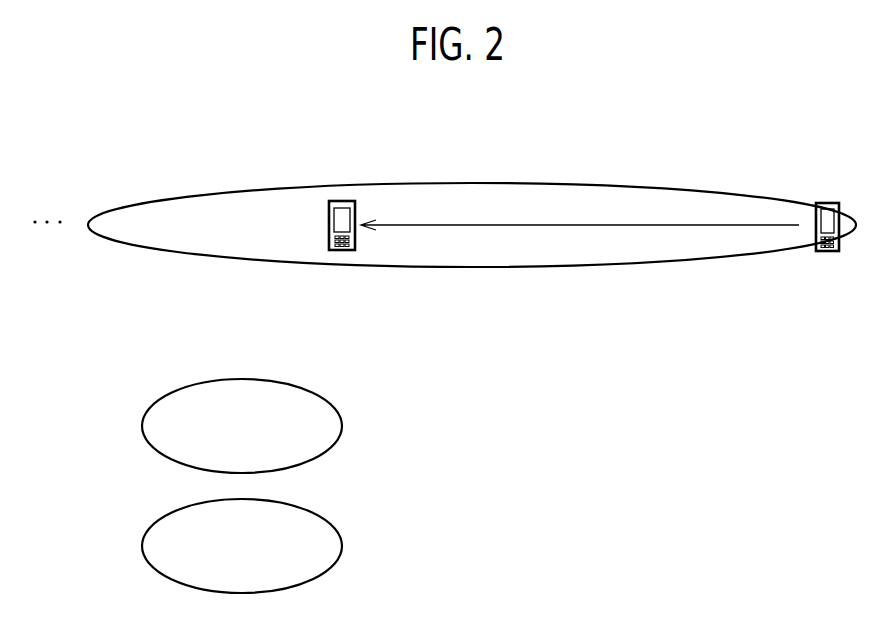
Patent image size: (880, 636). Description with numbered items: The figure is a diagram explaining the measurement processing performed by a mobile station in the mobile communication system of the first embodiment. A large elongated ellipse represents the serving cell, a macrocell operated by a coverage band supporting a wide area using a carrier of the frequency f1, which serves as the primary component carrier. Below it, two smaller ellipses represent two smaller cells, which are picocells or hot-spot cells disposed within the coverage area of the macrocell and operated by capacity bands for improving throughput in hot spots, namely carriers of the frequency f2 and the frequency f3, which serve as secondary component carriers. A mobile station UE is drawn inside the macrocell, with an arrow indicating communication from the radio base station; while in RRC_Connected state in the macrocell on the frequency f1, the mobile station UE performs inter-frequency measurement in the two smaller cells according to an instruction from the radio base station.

The mobile station UE is at (341, 201).
The frequency f1 is at (452, 207).
The frequency f2 is at (191, 409).
The frequency f3 is at (192, 530).